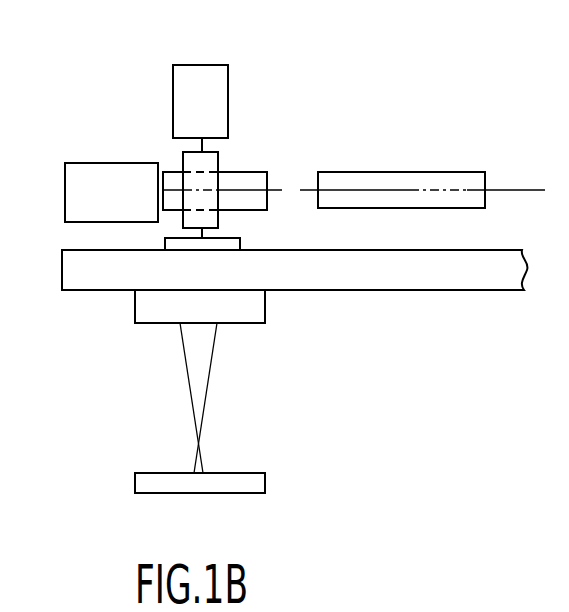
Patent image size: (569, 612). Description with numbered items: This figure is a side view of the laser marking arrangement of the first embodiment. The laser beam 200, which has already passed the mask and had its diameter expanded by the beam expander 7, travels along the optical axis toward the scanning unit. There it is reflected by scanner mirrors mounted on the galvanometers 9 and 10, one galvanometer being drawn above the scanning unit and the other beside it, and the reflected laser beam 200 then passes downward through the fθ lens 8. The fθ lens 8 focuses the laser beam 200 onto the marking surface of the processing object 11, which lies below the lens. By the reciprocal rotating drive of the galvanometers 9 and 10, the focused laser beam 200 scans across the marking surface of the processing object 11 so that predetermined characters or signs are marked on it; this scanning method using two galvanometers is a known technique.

The beam expander 7 is at (403, 172).
The fθ lens 8 is at (265, 307).
The galvanometer 9 is at (228, 65).
The galvanometer 10 is at (110, 163).
The processing object 11 is at (265, 478).
The laser beam 200 is at (208, 392).